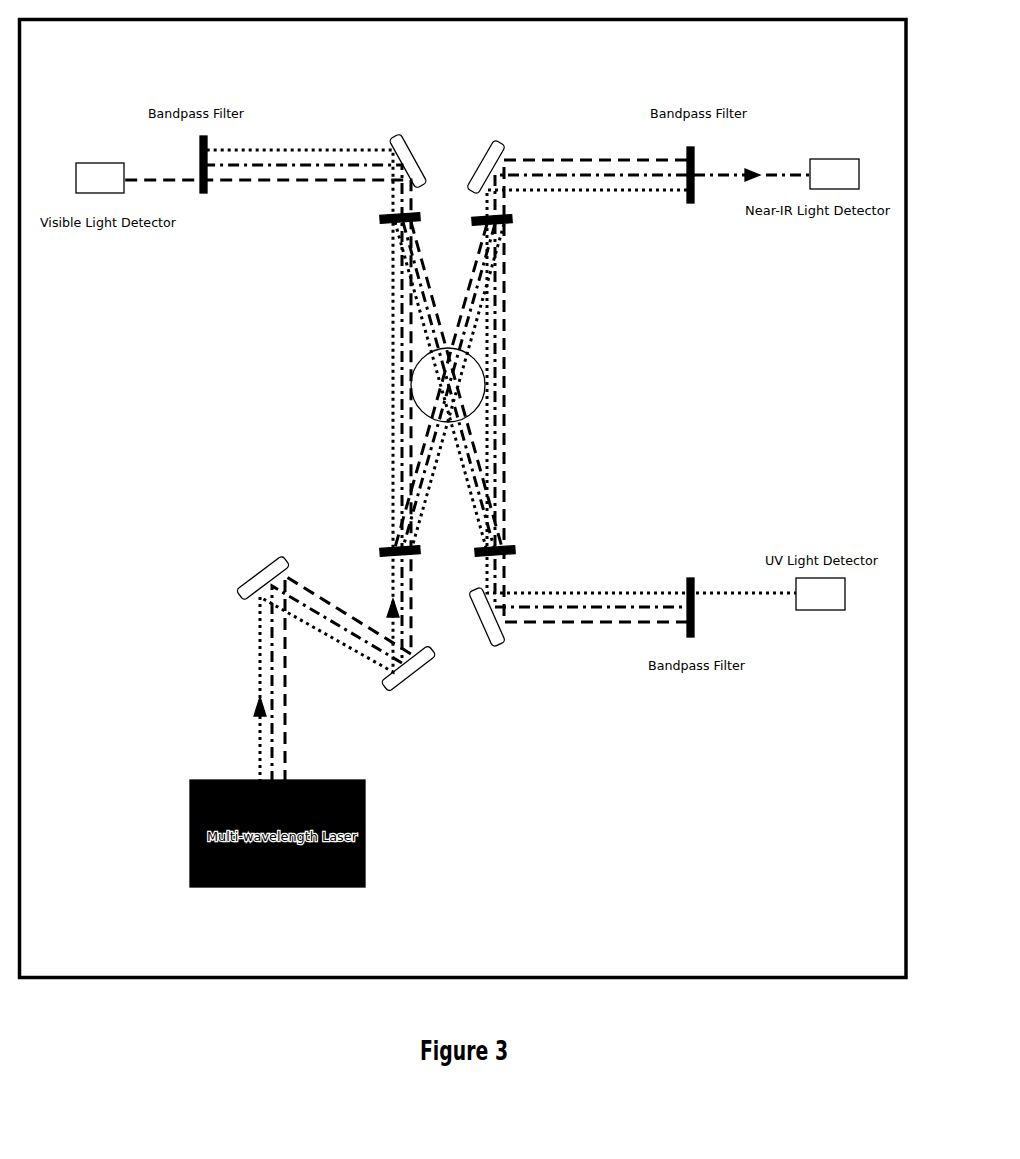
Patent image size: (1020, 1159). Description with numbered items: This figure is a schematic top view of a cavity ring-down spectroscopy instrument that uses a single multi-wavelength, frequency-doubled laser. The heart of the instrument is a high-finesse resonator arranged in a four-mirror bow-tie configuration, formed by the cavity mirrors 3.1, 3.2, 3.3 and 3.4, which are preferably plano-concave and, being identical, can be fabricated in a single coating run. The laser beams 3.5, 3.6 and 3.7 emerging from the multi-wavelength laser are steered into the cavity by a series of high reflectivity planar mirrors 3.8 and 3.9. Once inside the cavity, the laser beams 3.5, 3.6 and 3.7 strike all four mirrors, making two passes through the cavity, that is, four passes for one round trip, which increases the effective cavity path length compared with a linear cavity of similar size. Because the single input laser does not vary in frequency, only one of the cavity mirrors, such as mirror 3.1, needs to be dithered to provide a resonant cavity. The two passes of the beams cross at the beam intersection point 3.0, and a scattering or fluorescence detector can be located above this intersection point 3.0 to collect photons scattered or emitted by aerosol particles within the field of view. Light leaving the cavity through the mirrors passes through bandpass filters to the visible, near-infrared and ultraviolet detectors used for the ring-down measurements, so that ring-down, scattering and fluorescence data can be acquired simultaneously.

The beam intersection point 3.0 is at (480, 382).
The cavity mirror 3.1 is at (386, 552).
The cavity mirror 3.2 is at (381, 219).
The cavity mirror 3.3 is at (507, 221).
The cavity mirror 3.4 is at (510, 552).
The laser beam 3.5 is at (259, 722).
The laser beam 3.6 is at (272, 745).
The laser beam 3.7 is at (285, 771).
The high reflectivity planar mirror 3.8 is at (335, 623).
The high reflectivity planar mirror 3.9 is at (443, 152).